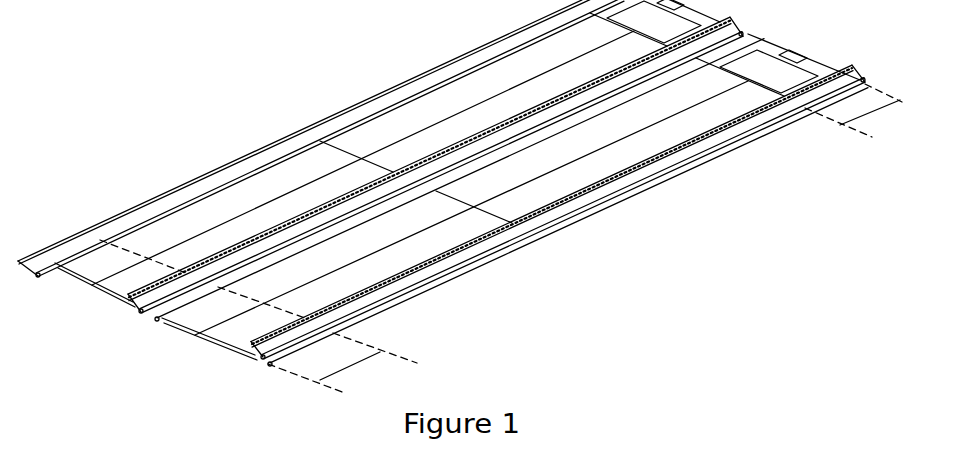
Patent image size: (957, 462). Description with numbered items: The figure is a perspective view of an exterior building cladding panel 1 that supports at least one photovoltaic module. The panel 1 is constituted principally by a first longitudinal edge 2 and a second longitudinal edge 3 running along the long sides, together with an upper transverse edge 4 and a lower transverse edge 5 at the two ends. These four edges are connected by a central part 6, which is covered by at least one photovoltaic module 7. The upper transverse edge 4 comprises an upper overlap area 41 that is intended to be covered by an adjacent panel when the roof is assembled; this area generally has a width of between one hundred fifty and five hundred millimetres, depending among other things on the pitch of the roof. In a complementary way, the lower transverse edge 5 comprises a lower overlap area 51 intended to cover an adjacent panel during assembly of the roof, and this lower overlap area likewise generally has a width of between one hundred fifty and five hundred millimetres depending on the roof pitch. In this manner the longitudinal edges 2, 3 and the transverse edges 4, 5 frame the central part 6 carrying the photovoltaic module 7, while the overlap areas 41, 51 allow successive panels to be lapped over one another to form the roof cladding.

The panel 1 is at (215, 85).
The first longitudinal edge 2 is at (100, 222).
The second longitudinal edge 3 is at (415, 293).
The upper transverse edge 4 is at (769, 45).
The upper overlap area 41 is at (868, 113).
The lower transverse edge 5 is at (175, 323).
The lower overlap area 51 is at (345, 366).
The central part 6 is at (458, 97).
The photovoltaic module 7 is at (190, 218).